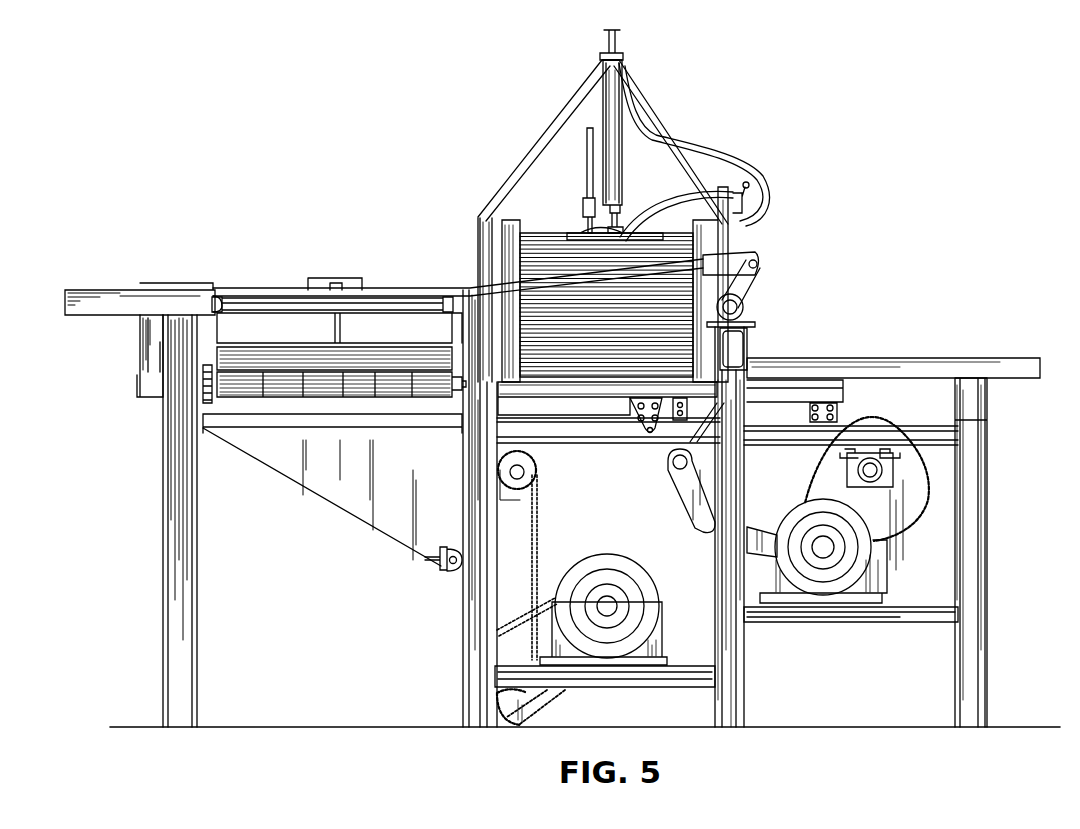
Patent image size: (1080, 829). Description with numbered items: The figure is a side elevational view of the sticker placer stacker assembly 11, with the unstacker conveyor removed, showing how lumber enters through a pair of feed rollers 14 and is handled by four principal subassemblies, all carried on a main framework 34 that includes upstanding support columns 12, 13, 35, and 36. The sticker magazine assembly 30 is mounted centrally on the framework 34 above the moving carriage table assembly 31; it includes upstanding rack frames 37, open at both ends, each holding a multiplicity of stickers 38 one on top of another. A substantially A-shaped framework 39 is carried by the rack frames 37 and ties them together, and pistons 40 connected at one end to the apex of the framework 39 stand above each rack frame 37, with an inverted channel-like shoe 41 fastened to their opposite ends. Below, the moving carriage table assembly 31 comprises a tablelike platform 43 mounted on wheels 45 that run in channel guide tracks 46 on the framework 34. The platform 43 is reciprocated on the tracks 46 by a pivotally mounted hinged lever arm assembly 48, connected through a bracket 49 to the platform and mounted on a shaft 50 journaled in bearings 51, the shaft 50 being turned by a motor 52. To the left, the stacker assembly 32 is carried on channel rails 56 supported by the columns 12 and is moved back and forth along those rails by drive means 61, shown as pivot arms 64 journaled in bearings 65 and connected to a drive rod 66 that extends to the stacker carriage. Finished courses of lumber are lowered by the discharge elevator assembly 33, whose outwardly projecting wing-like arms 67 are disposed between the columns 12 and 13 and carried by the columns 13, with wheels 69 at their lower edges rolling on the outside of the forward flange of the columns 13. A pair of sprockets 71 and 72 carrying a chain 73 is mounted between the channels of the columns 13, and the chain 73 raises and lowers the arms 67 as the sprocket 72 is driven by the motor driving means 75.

The sticker placer stacker assembly 11 is at (596, 541).
The upstanding support column 12 is at (196, 605).
The upstanding support column 13 is at (460, 606).
The feed roller 14 is at (290, 392).
The sticker magazine assembly 30 is at (597, 327).
The moving carriage table assembly 31 is at (656, 401).
The stacker assembly 32 is at (140, 352).
The discharge elevator assembly 33 is at (320, 477).
The main framework 34 is at (930, 408).
The upstanding support column 35 is at (750, 666).
The upstanding support column 36 is at (990, 669).
The rack frame 37 is at (734, 229).
The sticker 38 is at (672, 222).
The A-shaped framework 39 is at (654, 97).
The piston 40 is at (618, 176).
The inverted channel-like shoe 41 is at (580, 232).
The tablelike platform 43 is at (840, 384).
The wheels 45 is at (630, 425).
The channel guide tracks 46 is at (611, 447).
The hinged lever arm assembly 48 is at (700, 522).
The bracket 49 is at (668, 458).
The shaft 50 is at (858, 470).
The bearings 51 is at (872, 488).
The motor 52 is at (798, 512).
The channel rails 56 is at (76, 281).
The drive means 61 is at (752, 282).
The pivot arms 64 is at (758, 268).
The bearings 65 is at (748, 316).
The drive rod 66 is at (432, 282).
The wing-like arms 67 is at (338, 513).
The wheels 69 is at (450, 568).
The sprocket 71 is at (533, 475).
The sprocket 72 is at (540, 706).
The chain 73 is at (537, 545).
The motor driving means 75 is at (655, 608).